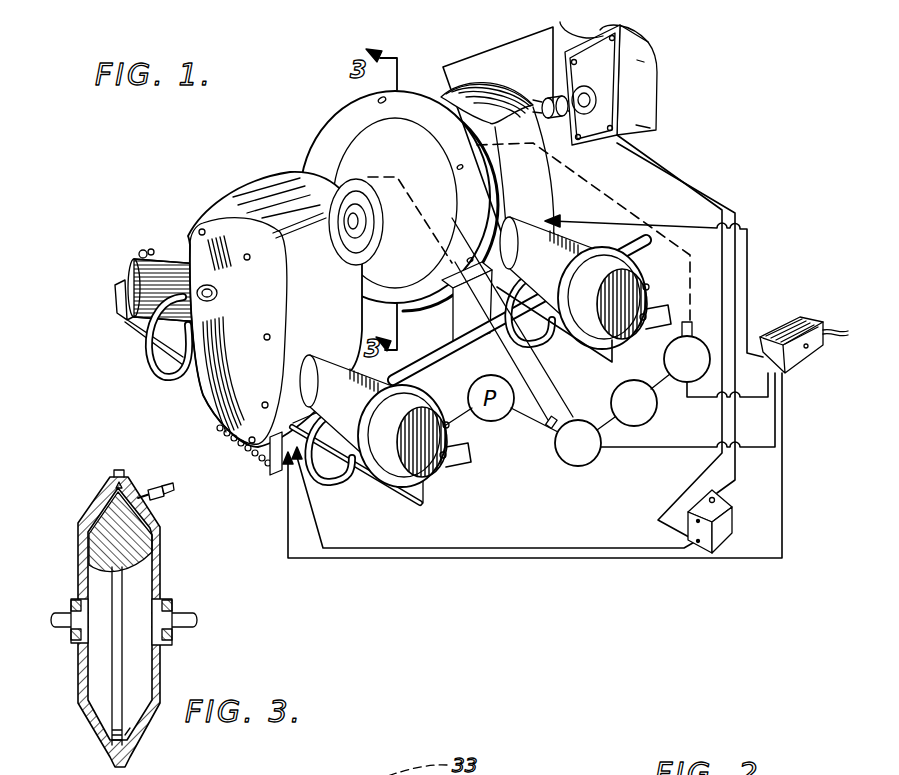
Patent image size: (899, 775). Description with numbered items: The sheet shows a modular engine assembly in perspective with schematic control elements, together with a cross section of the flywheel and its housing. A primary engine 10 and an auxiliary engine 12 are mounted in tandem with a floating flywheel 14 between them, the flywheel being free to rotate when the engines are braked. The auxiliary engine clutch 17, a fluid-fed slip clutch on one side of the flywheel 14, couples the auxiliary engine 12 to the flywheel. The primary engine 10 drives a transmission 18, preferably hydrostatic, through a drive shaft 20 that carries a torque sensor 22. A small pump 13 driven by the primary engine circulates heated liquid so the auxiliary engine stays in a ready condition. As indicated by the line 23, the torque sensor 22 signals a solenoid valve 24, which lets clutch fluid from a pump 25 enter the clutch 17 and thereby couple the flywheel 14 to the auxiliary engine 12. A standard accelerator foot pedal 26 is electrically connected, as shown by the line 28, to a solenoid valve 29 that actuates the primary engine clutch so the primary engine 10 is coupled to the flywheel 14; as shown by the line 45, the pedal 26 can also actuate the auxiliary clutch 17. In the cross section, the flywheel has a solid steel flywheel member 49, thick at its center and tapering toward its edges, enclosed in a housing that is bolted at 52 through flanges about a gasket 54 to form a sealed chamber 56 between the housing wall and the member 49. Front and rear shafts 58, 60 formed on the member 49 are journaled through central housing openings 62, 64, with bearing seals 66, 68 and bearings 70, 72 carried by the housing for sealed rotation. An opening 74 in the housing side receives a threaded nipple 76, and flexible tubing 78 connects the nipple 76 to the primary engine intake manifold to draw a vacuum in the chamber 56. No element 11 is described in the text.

In FIG. 1, the primary engine 10 is at (524, 64).
In FIG. 1, the lamp housing 11 is at (470, 440).
In FIG. 1, the auxiliary engine 12 is at (233, 181).
In FIG. 1, the small pump 13 is at (492, 424).
In FIG. 1, the floating flywheel 14 is at (325, 110).
In FIG. 1, the auxiliary engine clutch 17 is at (333, 162).
In FIG. 1, the transmission 18 is at (660, 107).
In FIG. 1, the drive shaft 20 is at (628, 50).
In FIG. 1, the torque sensor 22 is at (556, 122).
In FIG. 1, the signal line 23 is at (497, 50).
In FIG. 1, the solenoid valve 24 is at (578, 466).
In FIG. 1, the clutch fluid pump 25 is at (658, 413).
In FIG. 1, the accelerator foot pedal 26 is at (815, 308).
In FIG. 1, the electrical line 28 is at (744, 398).
In FIG. 1, the solenoid valve 29 is at (678, 337).
In FIG. 1, the line 45 is at (643, 448).
In FIG. 1, the bolts 52 is at (381, 102).
In FIG. 3, the solid flywheel member 49 is at (135, 552).
In FIG. 3, the gasket 54 is at (126, 470).
In FIG. 3, the chamber 56 is at (158, 588).
In FIG. 3, the front shaft 58 is at (63, 617).
In FIG. 3, the rear shaft 60 is at (193, 626).
In FIG. 3, the housing opening 62 is at (100, 624).
In FIG. 3, the housing opening 64 is at (184, 626).
In FIG. 3, the bearing seal 66 is at (90, 597).
In FIG. 3, the bearing seal 68 is at (170, 611).
In FIG. 3, the bearing 70 is at (65, 628).
In FIG. 3, the bearing 72 is at (176, 628).
In FIG. 3, the opening 74 is at (148, 497).
In FIG. 3, the nipple 76 is at (164, 502).
In FIG. 3, the flexible tubing 78 is at (176, 500).